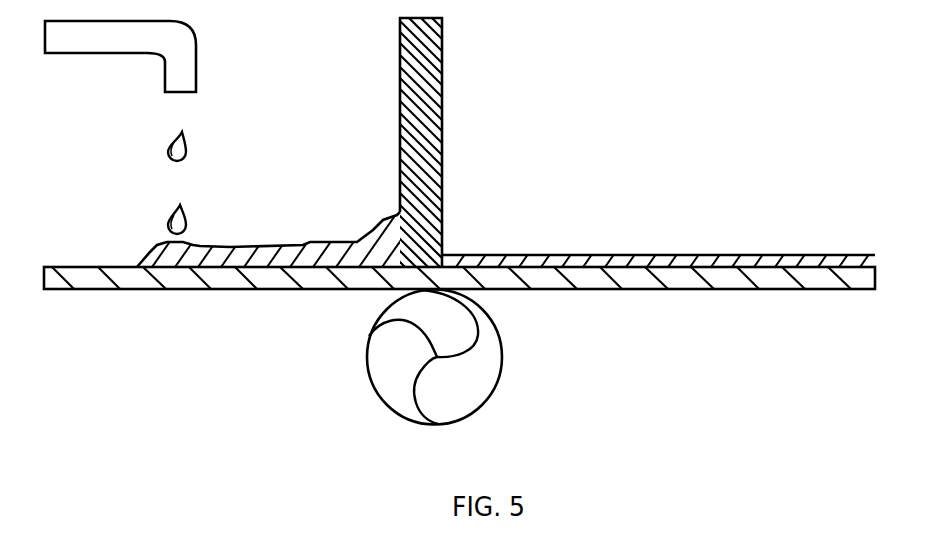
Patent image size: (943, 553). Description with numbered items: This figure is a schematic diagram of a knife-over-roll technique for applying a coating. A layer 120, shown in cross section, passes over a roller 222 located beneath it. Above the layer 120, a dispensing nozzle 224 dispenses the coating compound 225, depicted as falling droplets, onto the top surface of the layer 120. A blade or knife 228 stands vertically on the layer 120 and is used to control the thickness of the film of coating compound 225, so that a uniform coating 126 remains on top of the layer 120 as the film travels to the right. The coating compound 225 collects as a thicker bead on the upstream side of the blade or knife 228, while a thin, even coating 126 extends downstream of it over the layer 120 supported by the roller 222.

The dispensing nozzle 224 is at (195, 42).
The coating compound 225 is at (189, 144).
The blade or knife 228 is at (445, 135).
The uniform coating 126 is at (495, 256).
The layer 120 is at (285, 290).
The roller 222 is at (502, 347).